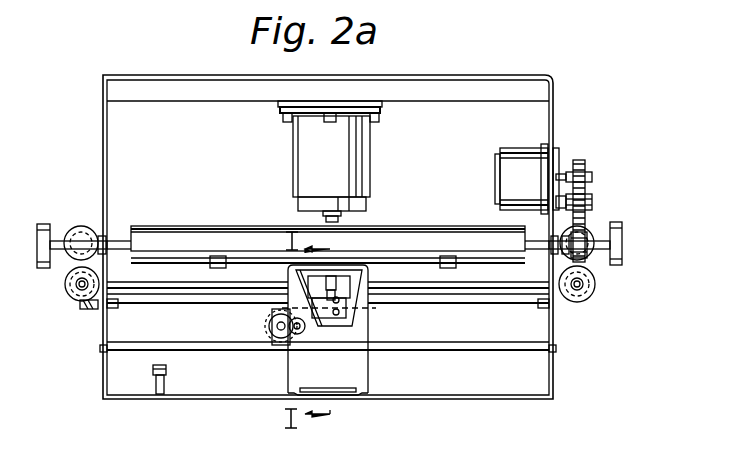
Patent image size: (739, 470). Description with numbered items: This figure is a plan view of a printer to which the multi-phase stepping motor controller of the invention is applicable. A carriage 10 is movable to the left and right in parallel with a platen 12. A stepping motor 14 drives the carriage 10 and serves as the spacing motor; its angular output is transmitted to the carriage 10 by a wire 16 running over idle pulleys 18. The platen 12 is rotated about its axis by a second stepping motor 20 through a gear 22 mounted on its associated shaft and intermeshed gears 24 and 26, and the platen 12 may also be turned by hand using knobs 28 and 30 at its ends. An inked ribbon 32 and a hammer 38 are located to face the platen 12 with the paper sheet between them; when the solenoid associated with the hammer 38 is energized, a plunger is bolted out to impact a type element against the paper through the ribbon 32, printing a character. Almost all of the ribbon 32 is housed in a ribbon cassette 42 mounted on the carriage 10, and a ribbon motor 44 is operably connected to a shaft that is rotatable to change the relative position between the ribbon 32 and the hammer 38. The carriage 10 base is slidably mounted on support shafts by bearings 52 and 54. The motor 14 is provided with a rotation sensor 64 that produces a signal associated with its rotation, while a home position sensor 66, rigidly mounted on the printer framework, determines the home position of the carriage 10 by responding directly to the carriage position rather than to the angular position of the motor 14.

The carriage 10 is at (406, 372).
The platen 12 is at (150, 226).
The stepping motor 14 is at (358, 153).
The wire 16 is at (482, 296).
The idle pulleys 18 is at (81, 226).
The stepping motor 20 is at (523, 148).
The gear 22 is at (594, 262).
The gear 24 is at (590, 210).
The gear 26 is at (580, 160).
The knob 28 is at (622, 240).
The knob 30 is at (37, 254).
The inked ribbon 32 is at (370, 252).
The hammer 38 is at (344, 282).
The ribbon cassette 42 is at (356, 396).
The ribbon motor 44 is at (262, 326).
The bearing 52 is at (512, 352).
The bearing 54 is at (518, 296).
The rotation sensor 64 is at (354, 104).
The home position sensor 66 is at (166, 372).